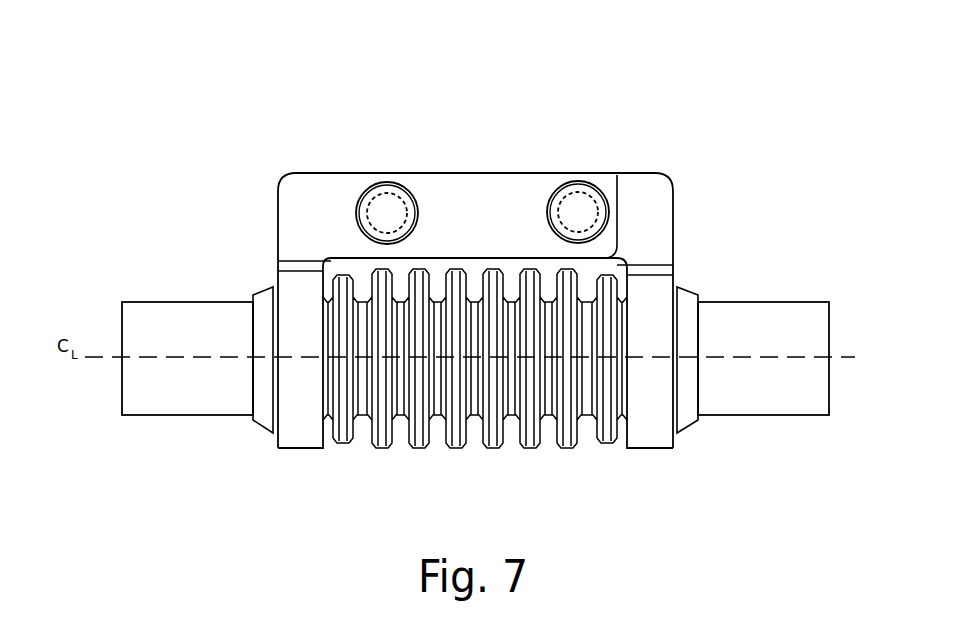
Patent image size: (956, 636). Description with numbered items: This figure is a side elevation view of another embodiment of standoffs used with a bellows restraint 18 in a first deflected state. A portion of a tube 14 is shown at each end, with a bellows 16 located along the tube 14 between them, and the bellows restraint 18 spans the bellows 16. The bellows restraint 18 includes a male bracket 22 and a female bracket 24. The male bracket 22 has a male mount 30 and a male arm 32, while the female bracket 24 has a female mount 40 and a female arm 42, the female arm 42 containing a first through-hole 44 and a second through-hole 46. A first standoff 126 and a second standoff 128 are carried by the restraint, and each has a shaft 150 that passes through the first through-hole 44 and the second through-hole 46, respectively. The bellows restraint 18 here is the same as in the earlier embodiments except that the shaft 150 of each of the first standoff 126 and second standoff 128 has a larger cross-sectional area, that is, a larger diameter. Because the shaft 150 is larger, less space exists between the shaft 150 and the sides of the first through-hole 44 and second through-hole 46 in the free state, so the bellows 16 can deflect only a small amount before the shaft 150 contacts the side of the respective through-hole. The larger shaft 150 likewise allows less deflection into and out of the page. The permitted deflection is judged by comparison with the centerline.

The tube 14 is at (194, 376).
The bellows 16 is at (493, 436).
The bellows restraint 18 is at (449, 110).
The male bracket 22 is at (672, 178).
The female bracket 24 is at (300, 183).
The male mount 30 is at (654, 423).
The male arm 32 is at (648, 230).
The female mount 40 is at (302, 427).
The female arm 42 is at (300, 222).
The first through-hole 44 is at (362, 190).
The second through-hole 46 is at (567, 184).
The first standoff 126 is at (386, 183).
The second standoff 128 is at (580, 182).
The shaft 150 is at (397, 212).